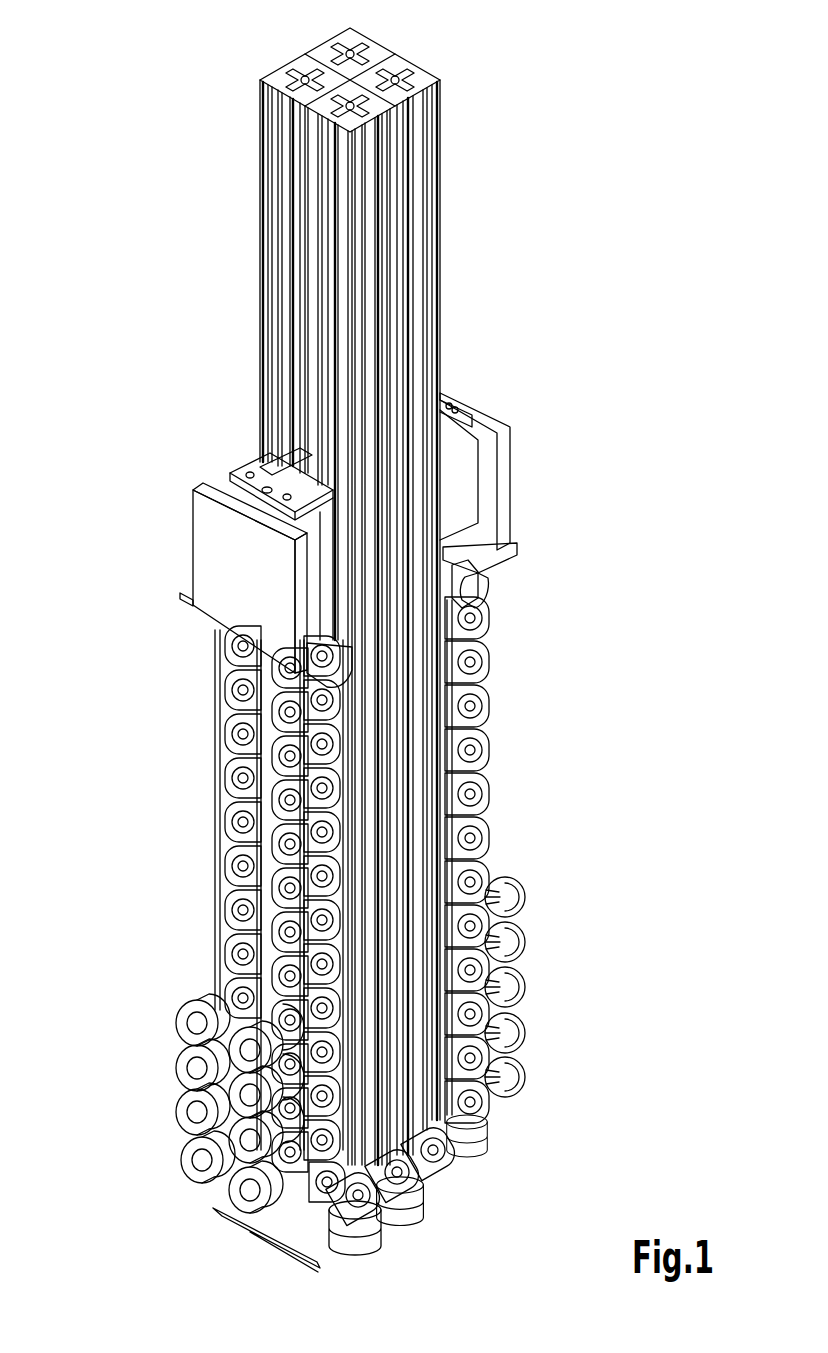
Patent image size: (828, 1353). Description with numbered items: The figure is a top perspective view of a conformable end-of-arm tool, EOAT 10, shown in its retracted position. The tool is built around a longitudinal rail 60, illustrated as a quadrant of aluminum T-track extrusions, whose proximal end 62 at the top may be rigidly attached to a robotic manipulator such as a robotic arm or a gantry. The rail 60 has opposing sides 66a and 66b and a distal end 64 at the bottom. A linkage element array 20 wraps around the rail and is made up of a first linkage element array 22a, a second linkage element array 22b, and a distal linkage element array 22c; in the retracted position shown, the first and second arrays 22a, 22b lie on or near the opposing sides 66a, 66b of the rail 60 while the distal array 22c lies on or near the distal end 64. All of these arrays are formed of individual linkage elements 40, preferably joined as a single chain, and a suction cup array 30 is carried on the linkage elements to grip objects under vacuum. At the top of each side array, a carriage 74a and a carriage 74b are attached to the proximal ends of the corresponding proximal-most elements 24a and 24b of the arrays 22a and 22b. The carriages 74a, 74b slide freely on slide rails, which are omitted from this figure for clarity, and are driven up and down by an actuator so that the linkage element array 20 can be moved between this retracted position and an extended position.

The end-of-arm tool (EOAT) 10 is at (627, 247).
The linkage element array 20 is at (490, 750).
The first linkage element array 22a is at (130, 1172).
The second linkage element array 22b is at (606, 1092).
The distal linkage element array 22c is at (330, 1282).
The proximal-most element 24a is at (220, 642).
The proximal-most element 24b is at (478, 598).
The suction cup array 30 is at (492, 1070).
The linkage element 40 is at (490, 830).
The longitudinal rail 60 is at (381, 298).
The proximal end 62 is at (378, 56).
The distal end 64 is at (487, 1188).
The opposing side 66a is at (280, 366).
The opposing side 66b is at (426, 352).
The carriage 74a is at (217, 558).
The carriage 74b is at (511, 471).